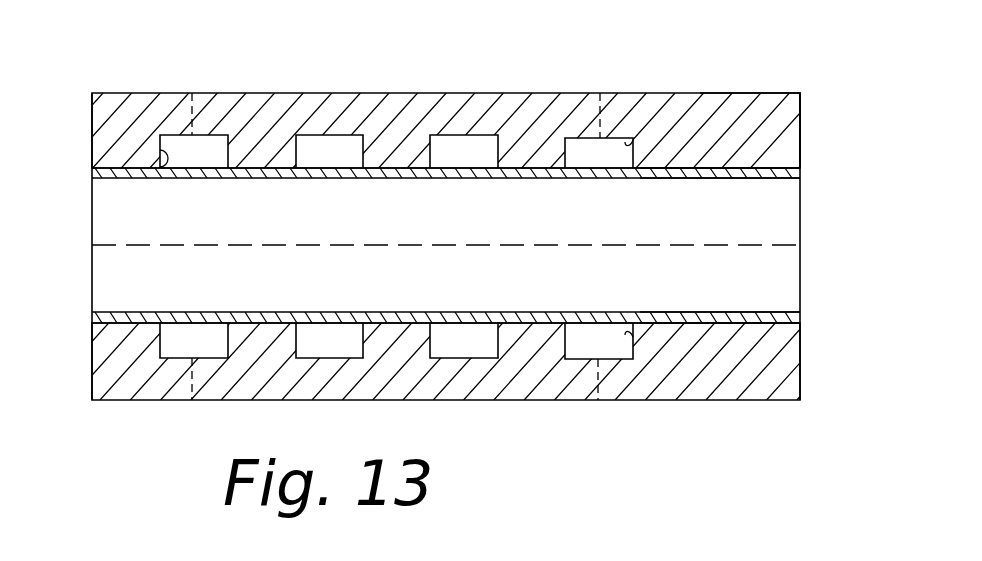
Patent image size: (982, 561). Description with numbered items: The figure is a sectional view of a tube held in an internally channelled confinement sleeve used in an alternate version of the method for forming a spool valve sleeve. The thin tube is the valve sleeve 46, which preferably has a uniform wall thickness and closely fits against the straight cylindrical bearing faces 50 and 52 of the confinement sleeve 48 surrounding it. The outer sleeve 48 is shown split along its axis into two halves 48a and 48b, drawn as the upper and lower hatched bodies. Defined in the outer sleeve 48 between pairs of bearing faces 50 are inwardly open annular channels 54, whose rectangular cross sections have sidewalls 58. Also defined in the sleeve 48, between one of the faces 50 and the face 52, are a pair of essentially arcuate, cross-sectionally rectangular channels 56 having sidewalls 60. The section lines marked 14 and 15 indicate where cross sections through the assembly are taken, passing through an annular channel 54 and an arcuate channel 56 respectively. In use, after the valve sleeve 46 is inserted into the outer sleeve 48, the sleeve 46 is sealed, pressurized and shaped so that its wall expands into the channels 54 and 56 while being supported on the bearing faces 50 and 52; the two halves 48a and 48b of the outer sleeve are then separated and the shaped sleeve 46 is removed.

The section line 14- 14 is at (668, 438).
The section line 15- 15 is at (135, 432).
The valve sleeve 46 is at (770, 170).
The confinement sleeve 48 is at (743, 93).
The half of the outer sleeve 48a is at (333, 92).
The half of the outer sleeve 48b is at (545, 400).
The bearing face 50 is at (113, 175).
The bearing face 52 is at (720, 170).
The annular channel 54 is at (203, 136).
The arcuate channel 56 is at (592, 138).
The sidewall 58 is at (152, 197).
The sidewall 60 is at (633, 140).